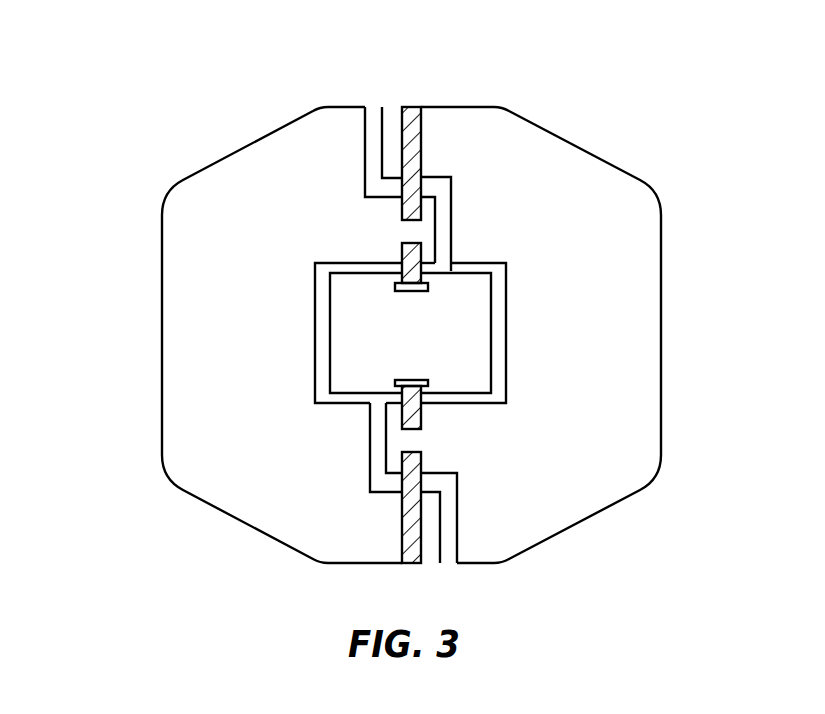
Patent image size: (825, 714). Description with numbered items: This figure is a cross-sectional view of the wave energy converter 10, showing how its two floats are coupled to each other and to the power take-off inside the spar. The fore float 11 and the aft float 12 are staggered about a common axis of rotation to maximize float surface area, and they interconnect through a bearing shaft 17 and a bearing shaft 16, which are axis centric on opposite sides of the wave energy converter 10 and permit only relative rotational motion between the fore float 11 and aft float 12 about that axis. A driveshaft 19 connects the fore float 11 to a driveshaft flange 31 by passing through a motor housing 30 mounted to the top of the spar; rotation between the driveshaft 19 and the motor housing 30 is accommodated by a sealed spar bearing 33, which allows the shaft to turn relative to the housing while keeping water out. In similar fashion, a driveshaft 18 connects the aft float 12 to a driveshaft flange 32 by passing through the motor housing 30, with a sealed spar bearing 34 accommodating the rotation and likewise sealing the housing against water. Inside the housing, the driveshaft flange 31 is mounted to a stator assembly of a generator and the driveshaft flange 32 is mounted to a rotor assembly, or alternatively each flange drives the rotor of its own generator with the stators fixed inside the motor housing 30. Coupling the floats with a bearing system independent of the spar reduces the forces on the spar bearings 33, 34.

The wave energy converter 10 is at (726, 201).
The fore float 11 is at (177, 353).
The aft float 12 is at (640, 338).
The bearing shaft 16 is at (412, 563).
The bearing shaft 17 is at (408, 107).
The driveshaft 18 is at (410, 528).
The driveshaft 19 is at (403, 244).
The motor housing 30 is at (492, 297).
The driveshaft flange 31 is at (408, 291).
The driveshaft flange 32 is at (408, 380).
The sealed spar bearing 33 is at (443, 271).
The sealed spar bearing 34 is at (440, 403).